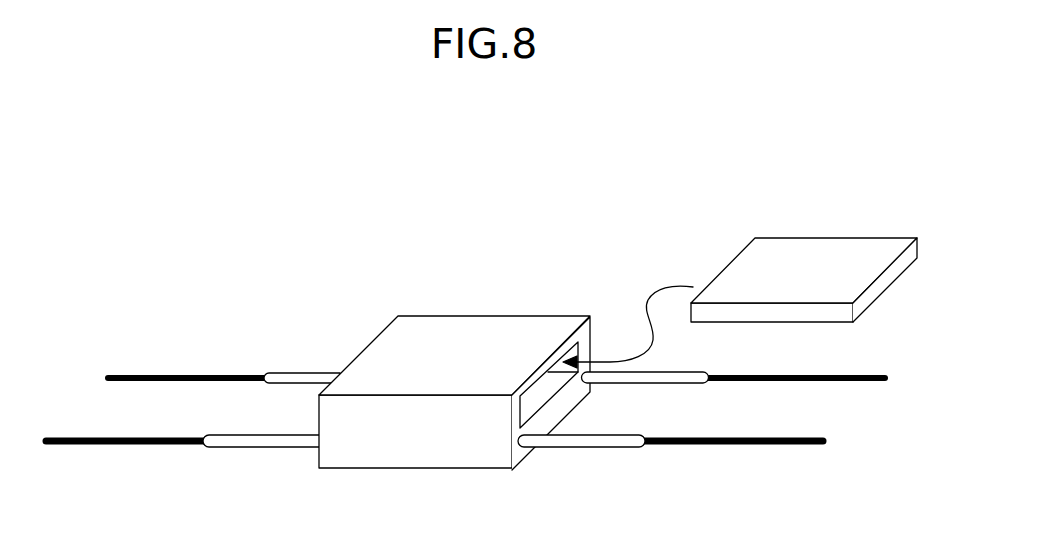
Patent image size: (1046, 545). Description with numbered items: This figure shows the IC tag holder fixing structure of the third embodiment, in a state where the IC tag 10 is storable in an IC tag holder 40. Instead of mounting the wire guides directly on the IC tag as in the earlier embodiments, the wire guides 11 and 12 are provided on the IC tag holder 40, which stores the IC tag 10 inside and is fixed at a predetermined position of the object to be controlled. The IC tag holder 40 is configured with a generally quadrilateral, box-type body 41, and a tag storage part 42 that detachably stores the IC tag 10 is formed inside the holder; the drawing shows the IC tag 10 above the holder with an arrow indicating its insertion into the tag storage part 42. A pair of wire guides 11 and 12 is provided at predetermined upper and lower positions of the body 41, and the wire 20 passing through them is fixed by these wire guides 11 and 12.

The IC tag 10 is at (789, 230).
The wire guide 11 is at (673, 370).
The wire guide 12 is at (242, 448).
The wire 20 is at (692, 445).
The IC tag holder 40 is at (454, 349).
The body 41 is at (397, 337).
The tag storage part 42 is at (538, 377).